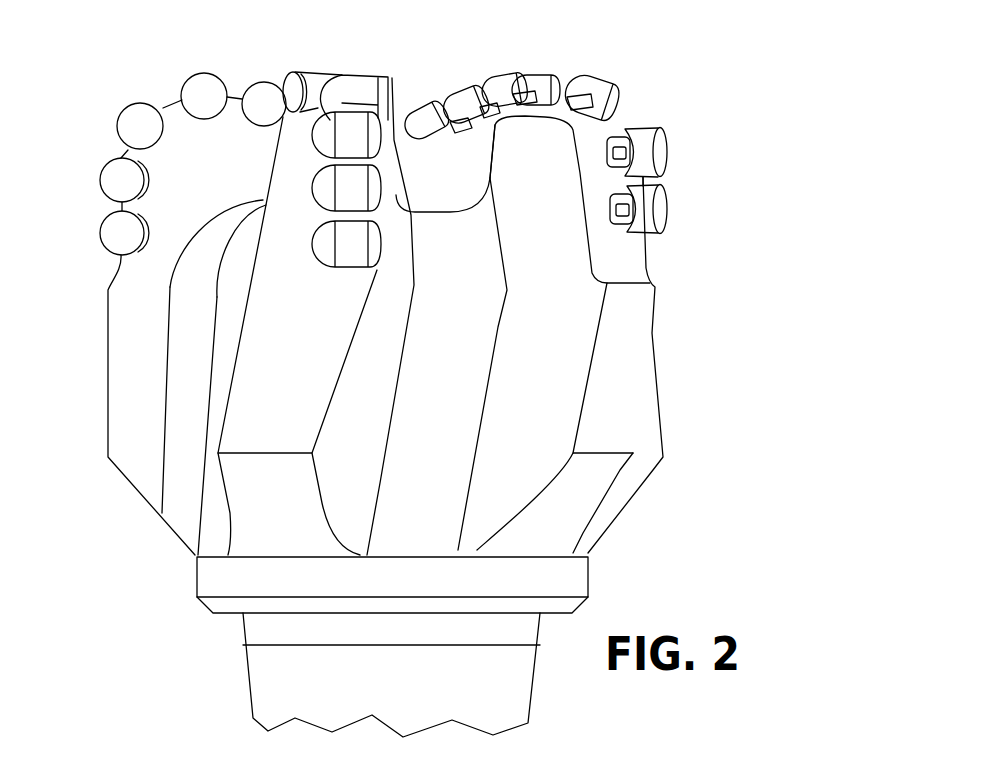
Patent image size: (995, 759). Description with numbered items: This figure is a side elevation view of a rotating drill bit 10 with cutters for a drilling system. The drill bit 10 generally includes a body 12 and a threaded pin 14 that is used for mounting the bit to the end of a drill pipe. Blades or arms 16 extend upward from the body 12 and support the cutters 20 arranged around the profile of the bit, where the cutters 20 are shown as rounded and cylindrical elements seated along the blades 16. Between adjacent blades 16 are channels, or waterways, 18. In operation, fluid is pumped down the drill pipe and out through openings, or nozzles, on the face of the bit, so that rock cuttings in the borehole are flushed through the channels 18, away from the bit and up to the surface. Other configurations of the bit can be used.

The drill bit 10 is at (656, 94).
The body 12 is at (455, 413).
The threaded pin 14 is at (248, 680).
The blades 16 is at (105, 370).
The channels 18 is at (235, 300).
The cutters 20 is at (204, 73).